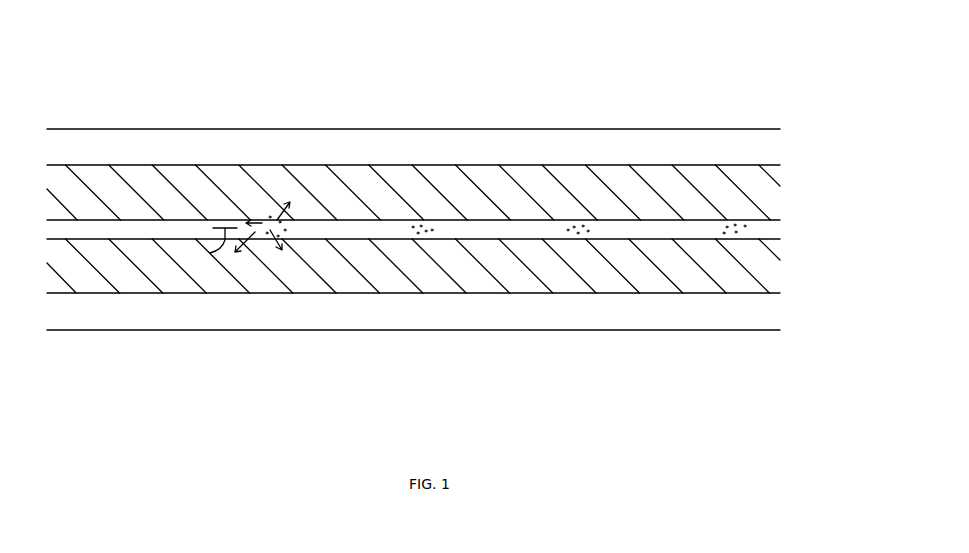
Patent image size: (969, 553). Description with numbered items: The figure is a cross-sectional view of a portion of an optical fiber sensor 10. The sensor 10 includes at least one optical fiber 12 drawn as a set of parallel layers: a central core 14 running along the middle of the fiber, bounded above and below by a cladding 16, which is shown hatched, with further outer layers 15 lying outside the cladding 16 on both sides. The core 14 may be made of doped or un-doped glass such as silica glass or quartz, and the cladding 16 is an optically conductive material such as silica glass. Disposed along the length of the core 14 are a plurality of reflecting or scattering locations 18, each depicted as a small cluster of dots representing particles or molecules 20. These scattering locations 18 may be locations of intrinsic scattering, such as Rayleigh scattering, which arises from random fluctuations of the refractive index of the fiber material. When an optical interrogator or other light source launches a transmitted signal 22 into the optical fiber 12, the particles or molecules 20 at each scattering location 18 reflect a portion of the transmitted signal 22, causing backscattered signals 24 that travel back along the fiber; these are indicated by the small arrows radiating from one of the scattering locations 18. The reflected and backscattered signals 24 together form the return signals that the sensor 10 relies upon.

The optical fiber sensor 10 is at (794, 46).
The optical fiber 12 is at (537, 128).
The core 14 is at (772, 228).
The outer layer 15 is at (462, 368).
The cladding 16 is at (147, 188).
The scattering location 18 is at (729, 223).
The particles or molecules 20 is at (727, 235).
The transmitted signal 22 is at (158, 294).
The backscattered signals 24 is at (262, 222).